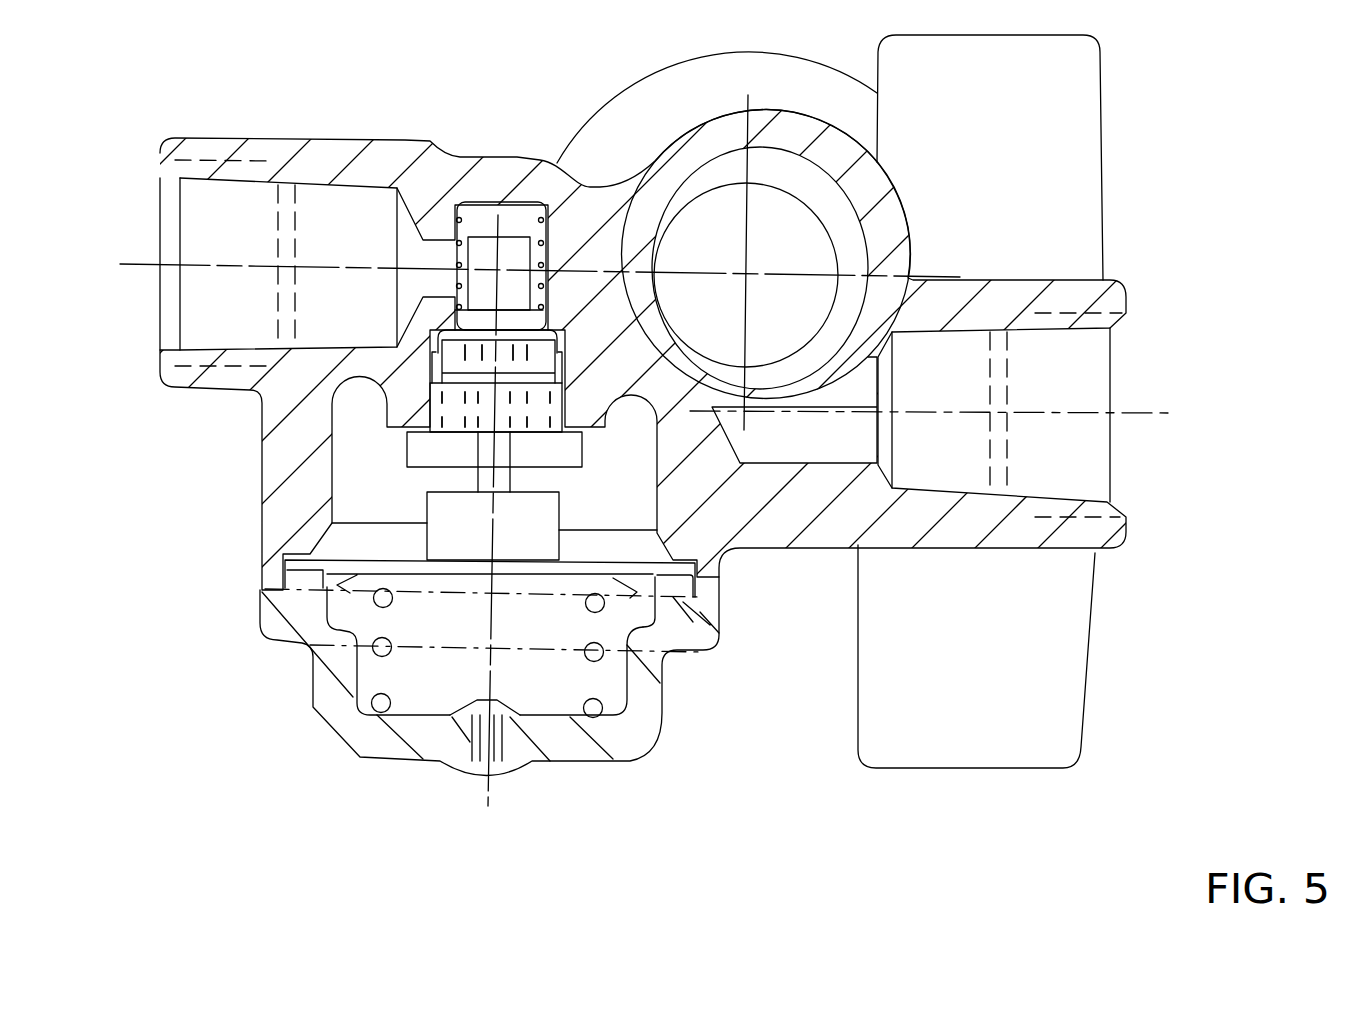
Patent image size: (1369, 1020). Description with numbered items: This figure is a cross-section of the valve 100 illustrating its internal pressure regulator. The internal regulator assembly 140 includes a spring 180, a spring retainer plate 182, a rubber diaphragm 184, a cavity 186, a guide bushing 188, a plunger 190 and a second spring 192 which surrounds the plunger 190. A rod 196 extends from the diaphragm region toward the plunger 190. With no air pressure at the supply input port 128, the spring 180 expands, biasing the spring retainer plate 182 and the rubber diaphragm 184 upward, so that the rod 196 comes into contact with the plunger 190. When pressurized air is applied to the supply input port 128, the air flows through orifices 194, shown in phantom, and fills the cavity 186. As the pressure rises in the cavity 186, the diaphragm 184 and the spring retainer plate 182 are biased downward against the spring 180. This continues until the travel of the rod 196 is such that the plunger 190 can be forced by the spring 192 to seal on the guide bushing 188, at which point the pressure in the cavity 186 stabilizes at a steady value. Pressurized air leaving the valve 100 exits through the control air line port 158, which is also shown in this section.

The valve 100 is at (1192, 96).
The supply input port 128 is at (200, 312).
The internal regulator assembly 140 is at (330, 486).
The control air line port 158 is at (1087, 377).
The spring 180 is at (381, 706).
The spring retainer plate 182 is at (567, 585).
The rubber diaphragm 184 is at (450, 568).
The cavity 186 is at (465, 446).
The guide bushing 188 is at (545, 360).
The plunger 190 is at (517, 257).
The spring 192 is at (455, 212).
The orifices 194 is at (518, 405).
The rod 196 is at (476, 468).